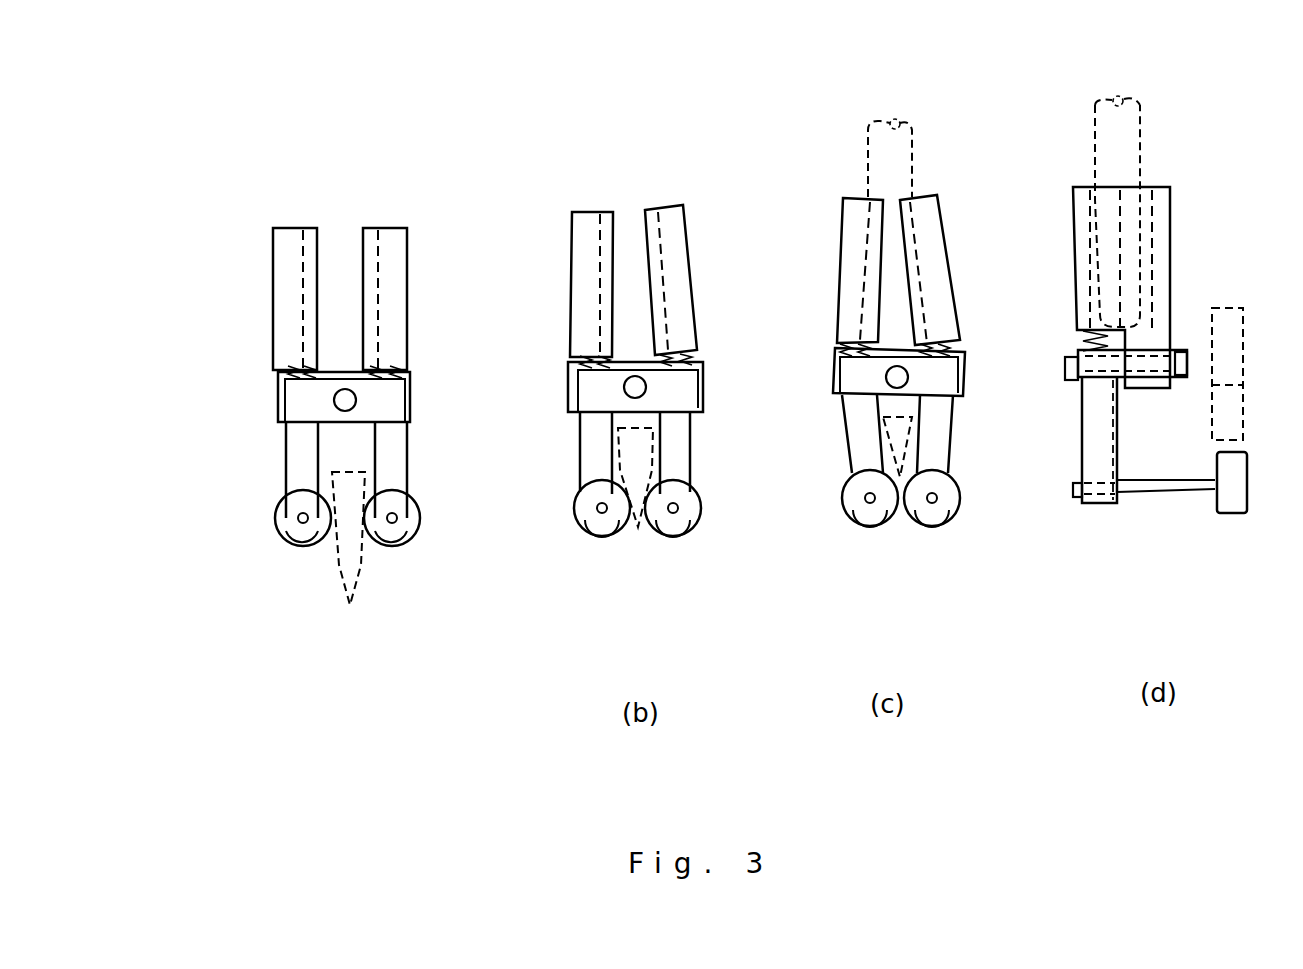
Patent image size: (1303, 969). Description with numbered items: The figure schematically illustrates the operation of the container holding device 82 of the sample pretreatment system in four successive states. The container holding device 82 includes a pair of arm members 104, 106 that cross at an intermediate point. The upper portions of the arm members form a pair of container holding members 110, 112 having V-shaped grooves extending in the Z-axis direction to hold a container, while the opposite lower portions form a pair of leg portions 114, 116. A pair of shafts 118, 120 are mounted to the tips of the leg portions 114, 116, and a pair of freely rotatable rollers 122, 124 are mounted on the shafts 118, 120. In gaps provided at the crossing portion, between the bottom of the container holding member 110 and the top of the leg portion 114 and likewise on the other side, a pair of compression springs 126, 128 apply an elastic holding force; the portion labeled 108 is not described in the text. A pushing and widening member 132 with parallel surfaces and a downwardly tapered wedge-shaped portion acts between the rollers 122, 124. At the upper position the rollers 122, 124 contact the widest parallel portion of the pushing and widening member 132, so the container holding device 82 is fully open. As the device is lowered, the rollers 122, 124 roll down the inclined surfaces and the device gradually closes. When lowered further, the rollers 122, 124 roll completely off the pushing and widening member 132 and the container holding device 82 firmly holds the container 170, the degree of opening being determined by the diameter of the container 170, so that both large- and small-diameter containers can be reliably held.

The container holding device 82 is at (338, 194).
The arm member 104 is at (334, 400).
The arm member 106 is at (408, 307).
The left holding column 108 is at (275, 320).
The container holding member 110 is at (397, 258).
The container holding member 112 is at (285, 260).
The leg portion 114 is at (387, 457).
The leg portion 116 is at (294, 455).
The shaft 118 is at (392, 524).
The shaft 120 is at (303, 524).
The roller 122 is at (421, 527).
The roller 124 is at (277, 520).
The compression spring 126 is at (408, 366).
The compression spring 128 is at (277, 372).
The pushing and widening member 132 is at (350, 602).
The container 170 is at (913, 160).